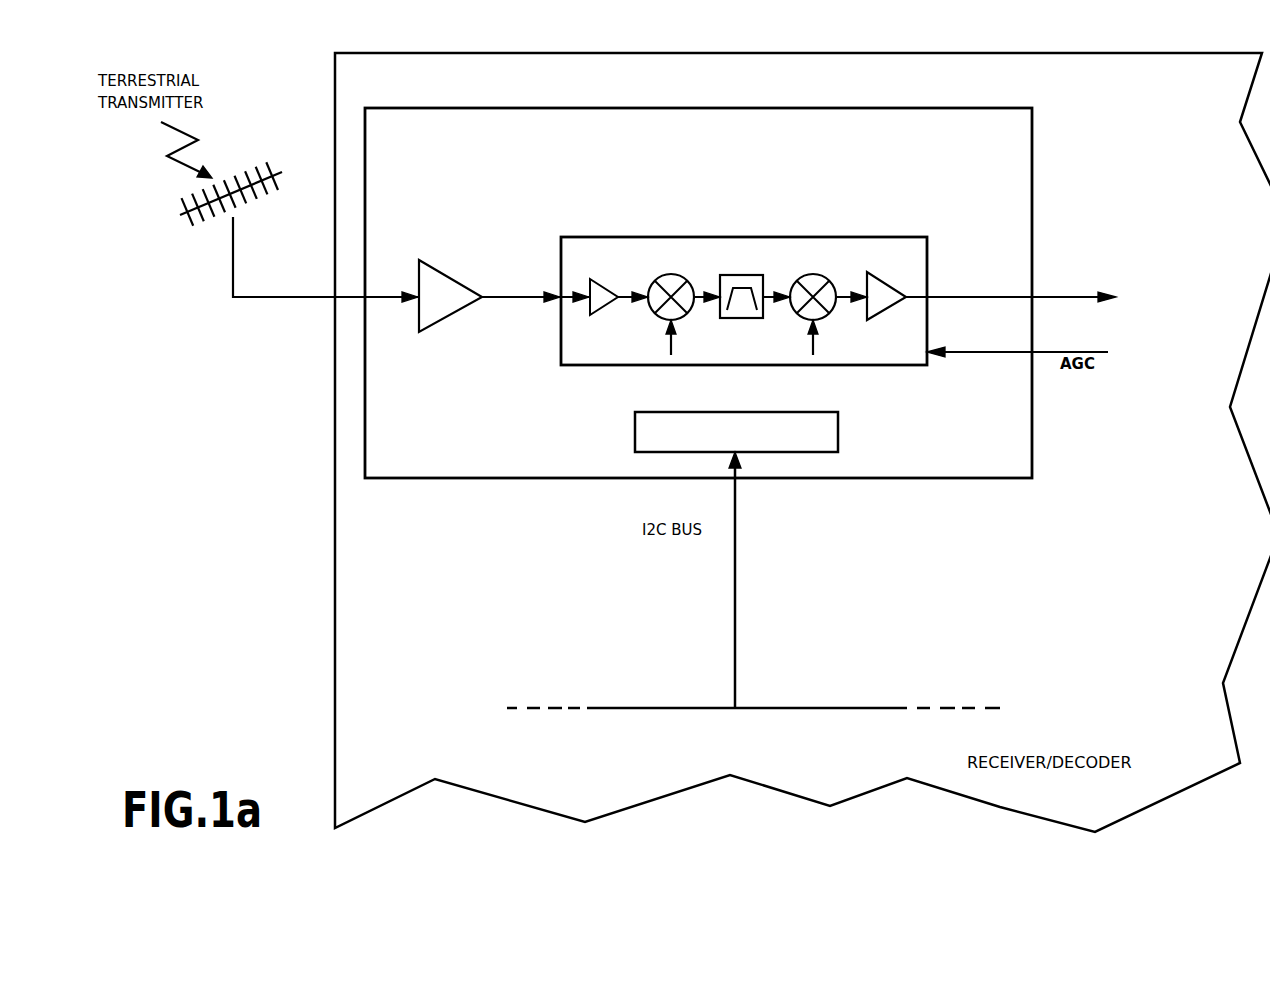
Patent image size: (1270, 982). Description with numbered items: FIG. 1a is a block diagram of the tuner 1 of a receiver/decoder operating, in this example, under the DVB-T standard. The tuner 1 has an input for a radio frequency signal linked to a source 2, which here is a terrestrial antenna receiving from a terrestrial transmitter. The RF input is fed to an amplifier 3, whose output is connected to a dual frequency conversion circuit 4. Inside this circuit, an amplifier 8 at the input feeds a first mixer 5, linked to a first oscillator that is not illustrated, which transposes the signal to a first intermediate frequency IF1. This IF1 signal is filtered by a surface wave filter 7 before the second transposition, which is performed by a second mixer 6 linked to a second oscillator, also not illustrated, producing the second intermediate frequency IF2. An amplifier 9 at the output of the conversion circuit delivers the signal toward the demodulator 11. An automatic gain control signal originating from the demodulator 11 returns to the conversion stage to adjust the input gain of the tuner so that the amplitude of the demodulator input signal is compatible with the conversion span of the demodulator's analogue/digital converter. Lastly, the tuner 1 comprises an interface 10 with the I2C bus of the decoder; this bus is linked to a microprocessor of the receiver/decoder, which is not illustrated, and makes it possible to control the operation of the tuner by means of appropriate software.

The tuner 1 is at (470, 478).
The source 2 is at (282, 173).
The amplifier 3 is at (452, 283).
The dual frequency conversion circuit 4 is at (927, 270).
The first mixer 5 is at (655, 279).
The second mixer 6 is at (800, 279).
The surface wave filter 7 is at (742, 275).
The amplifier 8 is at (600, 305).
The amplifier 9 is at (881, 311).
The interface 10 is at (635, 430).
The demodulator 11 is at (1011, 286).